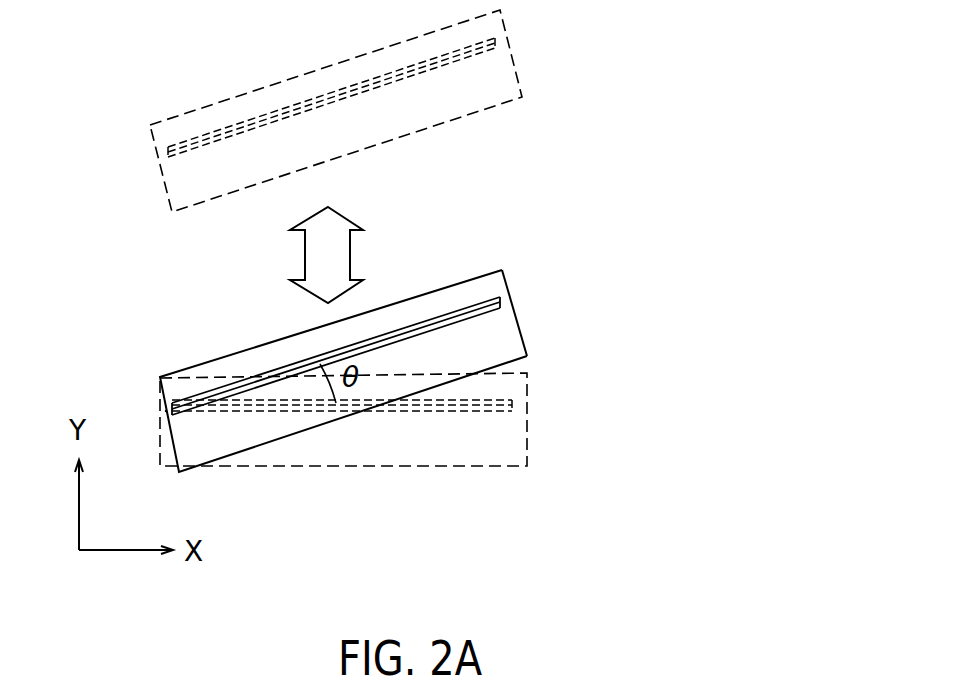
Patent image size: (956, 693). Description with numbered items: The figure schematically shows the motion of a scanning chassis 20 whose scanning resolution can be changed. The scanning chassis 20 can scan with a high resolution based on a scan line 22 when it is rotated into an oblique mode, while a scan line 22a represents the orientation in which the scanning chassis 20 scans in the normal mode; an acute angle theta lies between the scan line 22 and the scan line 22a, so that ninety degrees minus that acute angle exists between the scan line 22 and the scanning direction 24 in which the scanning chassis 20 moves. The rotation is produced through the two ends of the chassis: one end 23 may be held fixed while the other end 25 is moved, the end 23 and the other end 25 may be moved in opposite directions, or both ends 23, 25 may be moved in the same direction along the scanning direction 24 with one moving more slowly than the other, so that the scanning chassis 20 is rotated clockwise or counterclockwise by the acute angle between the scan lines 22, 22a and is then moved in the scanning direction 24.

The scanning chassis 20 is at (404, 349).
The scan line 22 is at (507, 273).
The scan line 22a is at (512, 392).
The one end of the scanning chassis 23 is at (160, 412).
The scanning direction 24 is at (337, 220).
The other end of the scanning chassis 25 is at (517, 315).